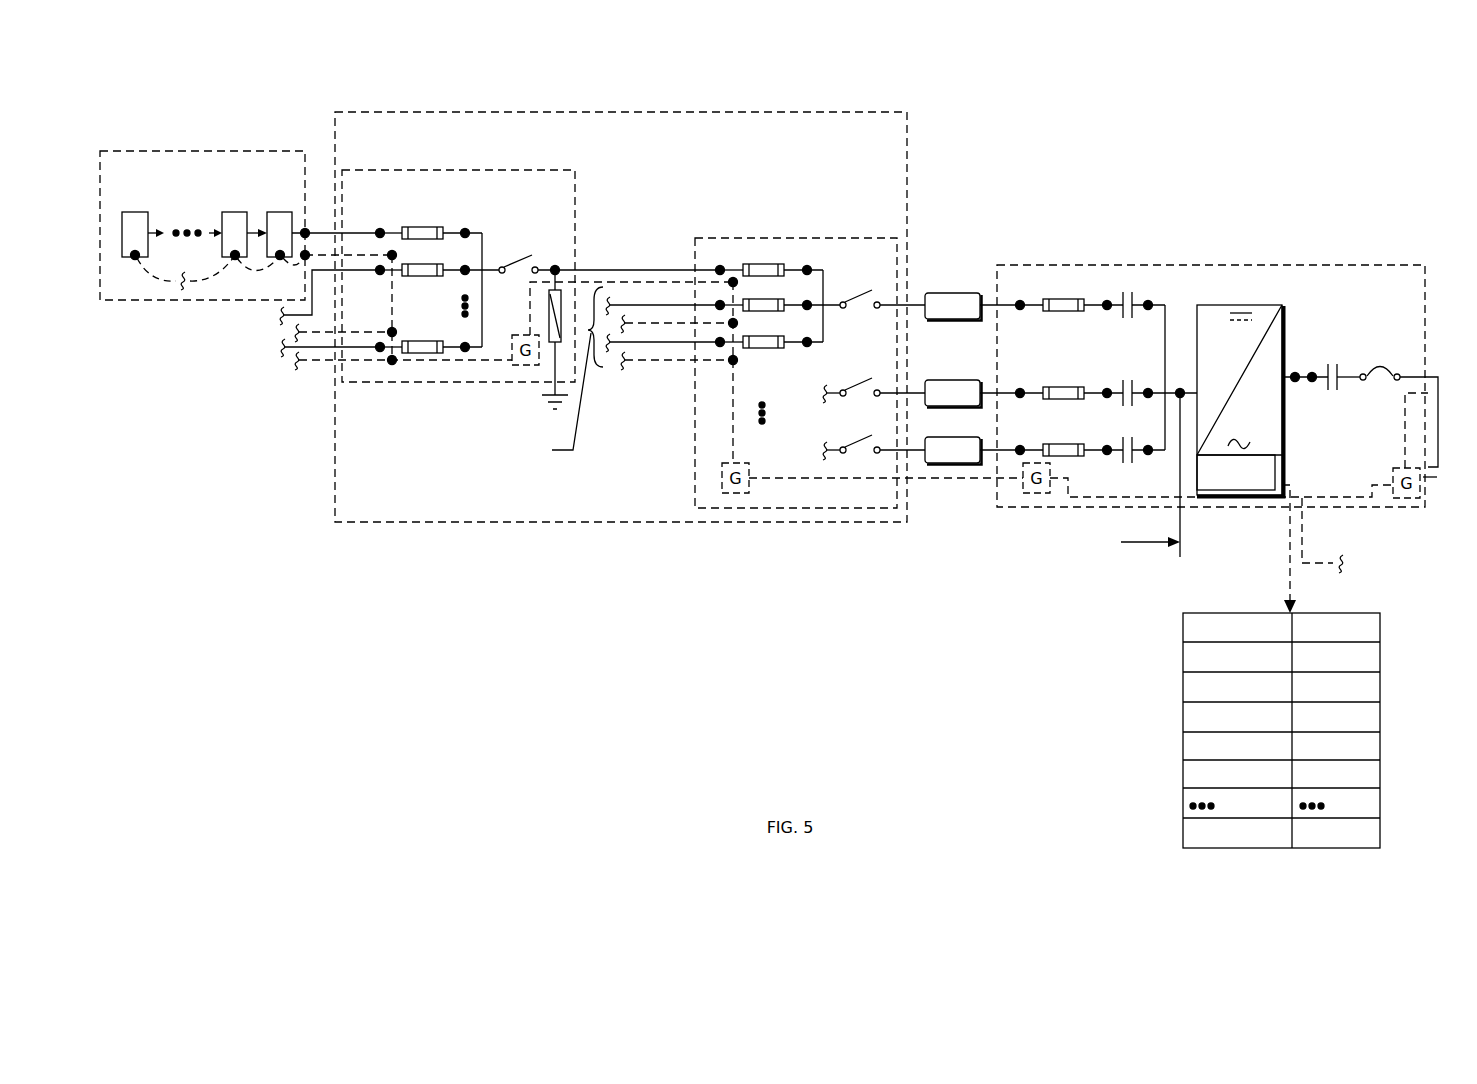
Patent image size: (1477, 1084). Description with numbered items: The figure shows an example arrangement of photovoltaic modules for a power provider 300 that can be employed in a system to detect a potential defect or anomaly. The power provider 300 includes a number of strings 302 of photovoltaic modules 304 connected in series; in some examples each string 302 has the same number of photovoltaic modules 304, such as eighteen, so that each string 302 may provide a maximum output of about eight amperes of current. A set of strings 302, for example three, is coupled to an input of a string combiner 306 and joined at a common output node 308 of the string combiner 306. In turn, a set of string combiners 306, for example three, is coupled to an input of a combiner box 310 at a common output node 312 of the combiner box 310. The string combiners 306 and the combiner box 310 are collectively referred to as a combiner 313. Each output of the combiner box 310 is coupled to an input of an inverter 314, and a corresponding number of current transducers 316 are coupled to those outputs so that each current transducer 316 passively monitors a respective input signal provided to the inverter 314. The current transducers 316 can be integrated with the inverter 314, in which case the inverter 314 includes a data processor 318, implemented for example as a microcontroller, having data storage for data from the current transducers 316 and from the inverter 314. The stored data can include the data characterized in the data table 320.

The power provider 300 is at (180, 58).
The string 302 is at (120, 302).
The photovoltaic module 304 is at (135, 212).
The string combiner 306 is at (576, 183).
The common output node 308 is at (503, 274).
The combiner box 310 is at (800, 238).
The common output node 312 is at (844, 310).
The combiner 313 is at (333, 482).
The inverter 314 is at (1232, 508).
The current transducer 316 is at (955, 293).
The data processor 318 is at (1180, 487).
The data table 320 is at (1183, 696).